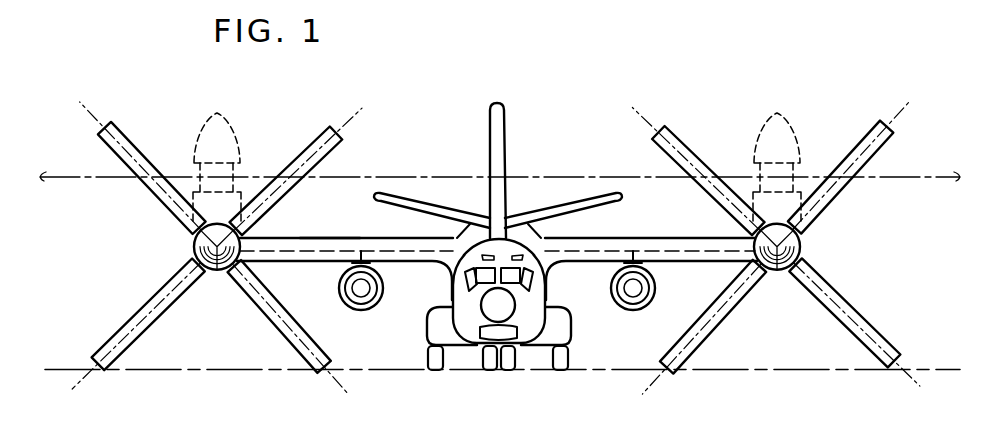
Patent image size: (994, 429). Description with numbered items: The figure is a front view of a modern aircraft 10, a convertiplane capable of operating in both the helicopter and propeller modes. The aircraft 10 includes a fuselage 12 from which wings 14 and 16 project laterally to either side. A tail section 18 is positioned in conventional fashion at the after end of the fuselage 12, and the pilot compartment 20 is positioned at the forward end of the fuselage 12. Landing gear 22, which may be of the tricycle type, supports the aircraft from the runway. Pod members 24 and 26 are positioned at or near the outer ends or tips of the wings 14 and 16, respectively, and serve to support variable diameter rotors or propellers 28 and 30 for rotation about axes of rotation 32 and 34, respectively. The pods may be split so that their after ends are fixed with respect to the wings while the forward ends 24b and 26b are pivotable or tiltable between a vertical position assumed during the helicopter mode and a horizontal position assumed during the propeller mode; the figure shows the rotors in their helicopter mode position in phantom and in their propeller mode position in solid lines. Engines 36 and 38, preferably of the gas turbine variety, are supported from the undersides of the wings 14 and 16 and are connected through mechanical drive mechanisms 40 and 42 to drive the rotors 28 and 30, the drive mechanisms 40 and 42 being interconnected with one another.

The aircraft 10 is at (560, 82).
The fuselage 12 is at (520, 233).
The wing 14 is at (293, 238).
The wing 16 is at (687, 243).
The tail section 18 is at (494, 105).
The pilot compartment 20 is at (512, 272).
The landing gear 22 is at (495, 380).
The pod member 24 is at (197, 242).
The forward end of pod 24b is at (233, 193).
The pod member 26 is at (800, 243).
The forward end of pod 26b is at (785, 140).
The variable diameter rotor 28 is at (120, 128).
The variable diameter rotor 30 is at (865, 322).
The axis of rotation 32 is at (217, 249).
The axis of rotation 34 is at (777, 249).
The engine 36 is at (361, 310).
The engine 38 is at (633, 310).
The mechanical drive mechanism 40 is at (330, 237).
The mechanical drive mechanism 42 is at (658, 250).